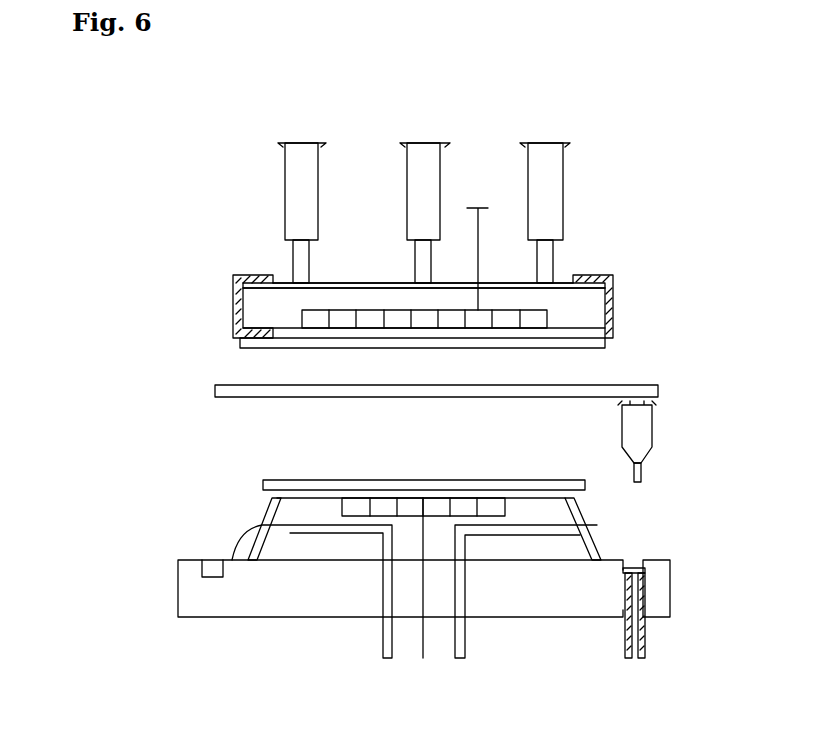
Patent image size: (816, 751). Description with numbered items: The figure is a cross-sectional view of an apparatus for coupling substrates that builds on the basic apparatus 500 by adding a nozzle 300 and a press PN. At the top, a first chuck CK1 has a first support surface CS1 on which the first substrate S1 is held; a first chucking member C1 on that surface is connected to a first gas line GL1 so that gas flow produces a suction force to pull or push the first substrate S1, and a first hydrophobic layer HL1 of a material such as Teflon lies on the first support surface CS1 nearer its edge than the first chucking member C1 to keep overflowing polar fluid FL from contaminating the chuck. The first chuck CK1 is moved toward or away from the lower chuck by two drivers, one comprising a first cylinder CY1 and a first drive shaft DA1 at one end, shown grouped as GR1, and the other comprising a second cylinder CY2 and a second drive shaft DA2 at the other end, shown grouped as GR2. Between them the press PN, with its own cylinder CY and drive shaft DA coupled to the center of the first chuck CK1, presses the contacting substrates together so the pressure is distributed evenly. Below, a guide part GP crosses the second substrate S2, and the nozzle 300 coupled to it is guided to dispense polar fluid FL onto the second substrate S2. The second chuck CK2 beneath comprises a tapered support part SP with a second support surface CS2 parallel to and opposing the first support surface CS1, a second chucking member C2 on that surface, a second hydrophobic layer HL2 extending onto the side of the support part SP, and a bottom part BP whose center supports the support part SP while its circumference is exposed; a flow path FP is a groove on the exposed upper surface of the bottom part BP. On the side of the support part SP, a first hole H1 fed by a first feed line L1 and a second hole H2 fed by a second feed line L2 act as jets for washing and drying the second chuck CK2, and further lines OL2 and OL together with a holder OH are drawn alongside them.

The pressing unit PN is at (365, 88).
The drive shaft DA is at (418, 262).
The cylinder CY is at (423, 146).
The apparatus for coupling substrates 500 is at (631, 109).
The first gas line GL1 is at (475, 224).
The second cylinder CY2 is at (285, 205).
The second drive shaft DA2 is at (293, 250).
The second gripper GR2 is at (177, 197).
The first cylinder CY1 is at (555, 207).
The first drive shaft DA1 is at (553, 250).
The first gripper GR1 is at (670, 197).
The first hydrophobic layer HL1 is at (613, 288).
The first chuck CK1 is at (672, 285).
The first support surface CS1 is at (287, 325).
The first chucking member C1 is at (562, 326).
The first substrate S1 is at (605, 344).
The guide part GP is at (476, 397).
The nozzle 300 is at (672, 441).
The polar fluid FL is at (641, 470).
The second support surface CS2 is at (516, 490).
The second substrate S2 is at (585, 483).
The second hole H2 is at (600, 533).
The outer holder OH is at (634, 570).
The second chucking member C2 is at (263, 481).
The second hydrophobic layer HL2 is at (277, 497).
The support part SP is at (261, 524).
The second chuck CK2 is at (392, 548).
The bottom part BP is at (380, 588).
The flow path FP is at (208, 565).
The first hole H1 is at (270, 530).
The first feed line L1 is at (385, 658).
The second outer lead OL2 is at (425, 658).
The second feed line L2 is at (455, 660).
The outer lead OL is at (625, 655).